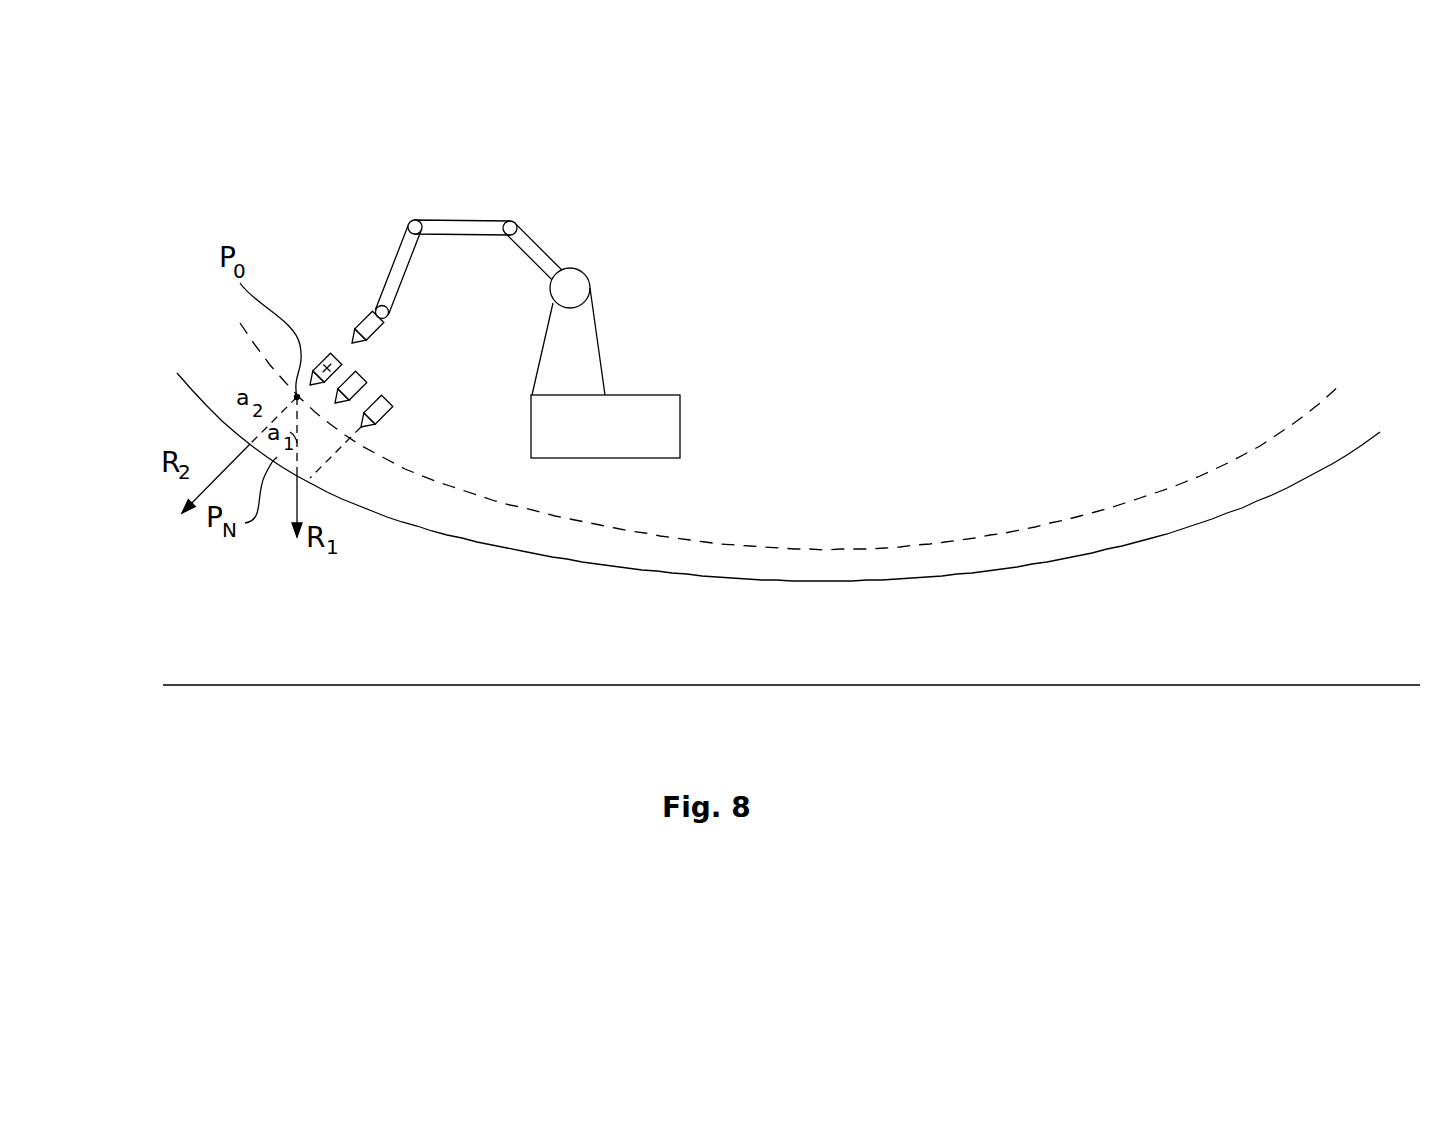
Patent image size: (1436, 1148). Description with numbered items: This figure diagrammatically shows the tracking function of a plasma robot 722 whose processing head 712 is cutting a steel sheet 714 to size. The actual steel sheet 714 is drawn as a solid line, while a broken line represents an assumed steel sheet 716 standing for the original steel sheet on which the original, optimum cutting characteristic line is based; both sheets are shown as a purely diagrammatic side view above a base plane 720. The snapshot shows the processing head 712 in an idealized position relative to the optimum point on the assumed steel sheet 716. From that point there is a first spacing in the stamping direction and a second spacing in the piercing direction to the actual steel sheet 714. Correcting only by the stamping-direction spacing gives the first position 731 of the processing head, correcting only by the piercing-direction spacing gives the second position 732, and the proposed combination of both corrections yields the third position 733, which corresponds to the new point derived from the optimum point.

The processing head 712 is at (361, 318).
The plasma robot 722 is at (638, 302).
The first position of the processing head 731 is at (394, 417).
The second position of the processing head 732 is at (310, 367).
The third position of the processing head 733 is at (358, 373).
The steel sheet 714 is at (1198, 525).
The assumed steel sheet 716 is at (1102, 507).
The base plane 720 is at (1168, 687).